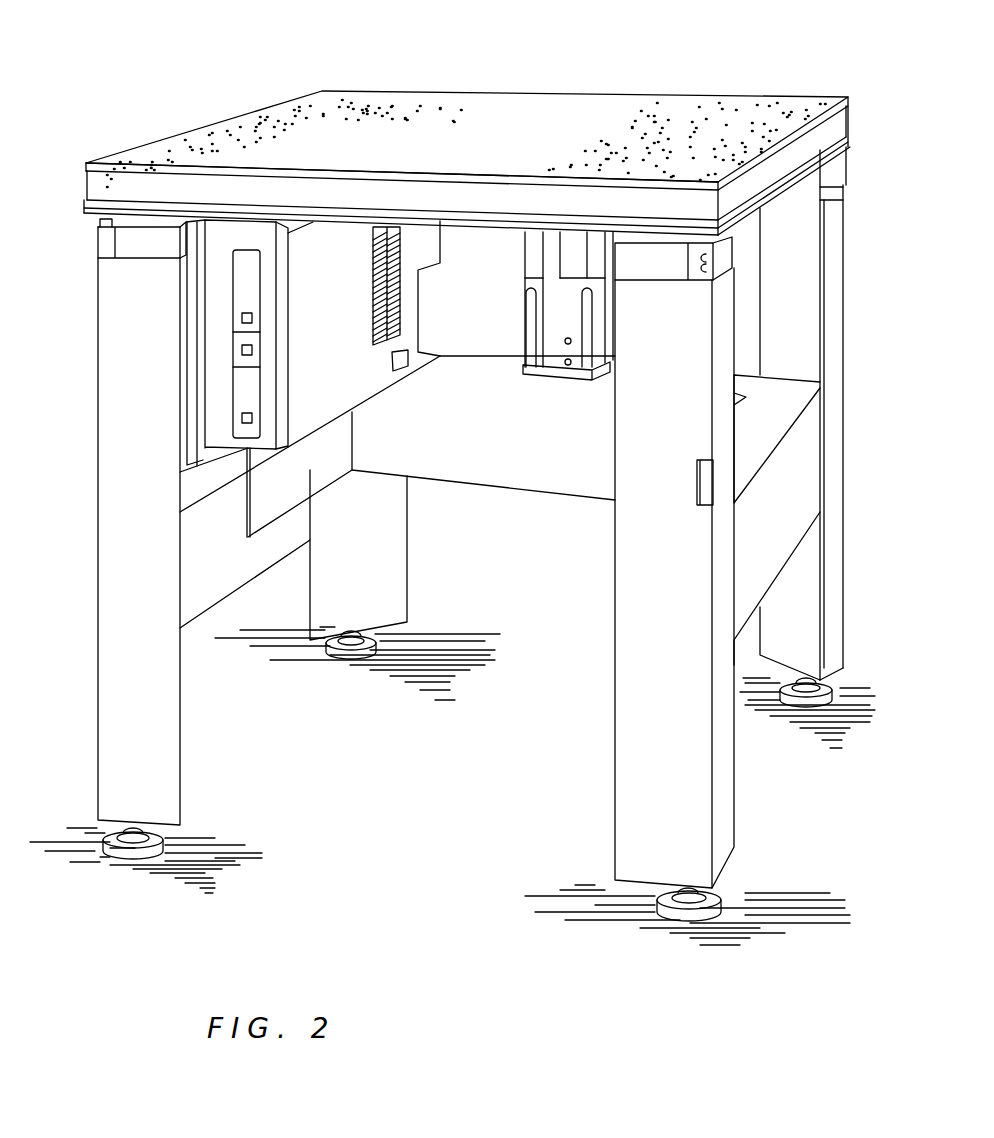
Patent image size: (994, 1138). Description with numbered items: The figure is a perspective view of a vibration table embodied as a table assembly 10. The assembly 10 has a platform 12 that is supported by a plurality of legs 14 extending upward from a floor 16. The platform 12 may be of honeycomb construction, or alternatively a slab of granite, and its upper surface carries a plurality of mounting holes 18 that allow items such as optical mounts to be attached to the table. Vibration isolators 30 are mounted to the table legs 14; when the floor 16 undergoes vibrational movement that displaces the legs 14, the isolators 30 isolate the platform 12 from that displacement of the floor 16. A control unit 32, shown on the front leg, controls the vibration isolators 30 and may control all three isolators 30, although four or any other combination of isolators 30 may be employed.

The table assembly 10 is at (192, 99).
The platform 12 is at (467, 126).
The legs 14 is at (318, 612).
The floor 16 is at (431, 789).
The mounting holes 18 is at (411, 100).
The vibration isolators 30 is at (107, 243).
The control unit 32 is at (247, 380).